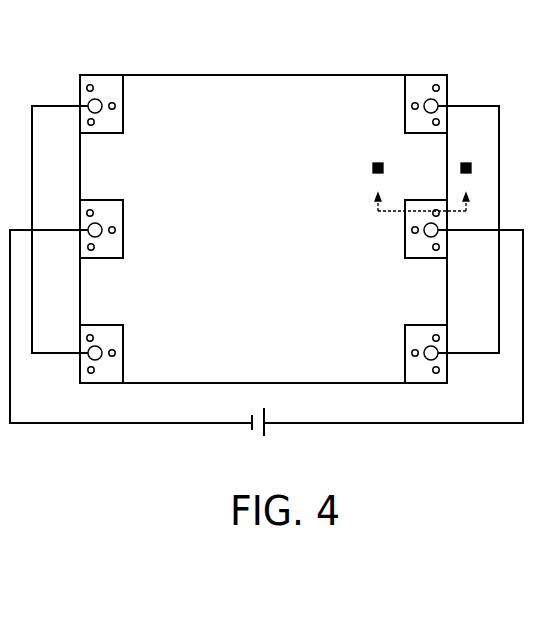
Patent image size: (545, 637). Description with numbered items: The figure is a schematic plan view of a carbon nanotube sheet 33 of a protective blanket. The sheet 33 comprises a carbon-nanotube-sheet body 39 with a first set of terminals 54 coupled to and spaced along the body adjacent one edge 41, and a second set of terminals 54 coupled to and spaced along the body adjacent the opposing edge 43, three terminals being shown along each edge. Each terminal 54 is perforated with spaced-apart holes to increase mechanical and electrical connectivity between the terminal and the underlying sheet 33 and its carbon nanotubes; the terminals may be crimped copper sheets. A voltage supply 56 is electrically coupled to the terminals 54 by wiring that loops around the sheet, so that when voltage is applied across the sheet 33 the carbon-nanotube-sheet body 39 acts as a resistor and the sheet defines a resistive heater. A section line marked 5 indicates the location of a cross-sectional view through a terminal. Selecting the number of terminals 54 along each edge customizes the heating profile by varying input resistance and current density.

The sheet 33 is at (352, 75).
The carbon-nanotube-sheet body 39 is at (157, 75).
The edge 41 is at (80, 158).
The edge 43 is at (448, 152).
The terminals 54 is at (80, 92).
The voltage supply 56 is at (448, 371).
The section line for FIG. 5 is at (419, 187).